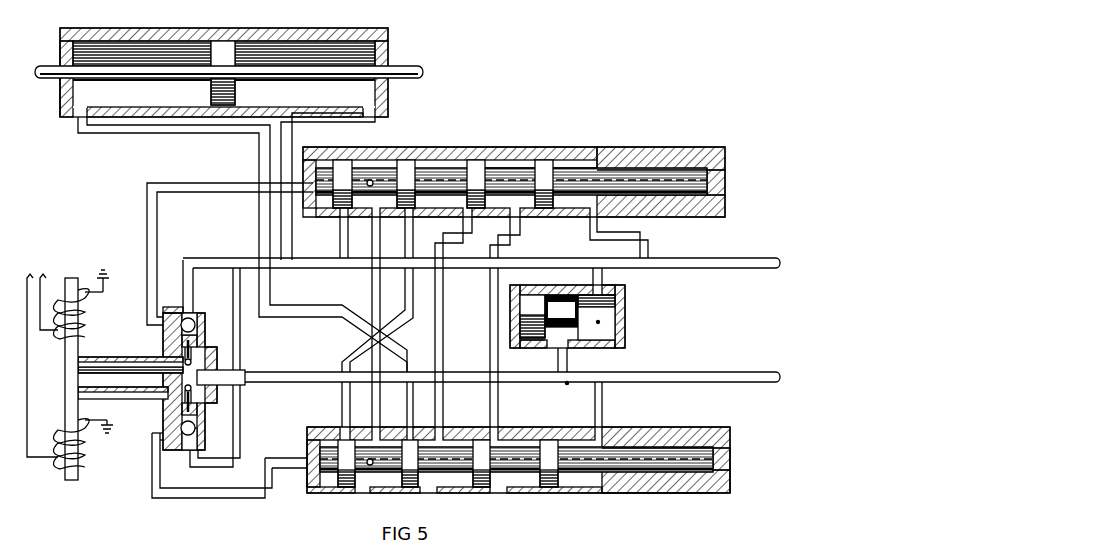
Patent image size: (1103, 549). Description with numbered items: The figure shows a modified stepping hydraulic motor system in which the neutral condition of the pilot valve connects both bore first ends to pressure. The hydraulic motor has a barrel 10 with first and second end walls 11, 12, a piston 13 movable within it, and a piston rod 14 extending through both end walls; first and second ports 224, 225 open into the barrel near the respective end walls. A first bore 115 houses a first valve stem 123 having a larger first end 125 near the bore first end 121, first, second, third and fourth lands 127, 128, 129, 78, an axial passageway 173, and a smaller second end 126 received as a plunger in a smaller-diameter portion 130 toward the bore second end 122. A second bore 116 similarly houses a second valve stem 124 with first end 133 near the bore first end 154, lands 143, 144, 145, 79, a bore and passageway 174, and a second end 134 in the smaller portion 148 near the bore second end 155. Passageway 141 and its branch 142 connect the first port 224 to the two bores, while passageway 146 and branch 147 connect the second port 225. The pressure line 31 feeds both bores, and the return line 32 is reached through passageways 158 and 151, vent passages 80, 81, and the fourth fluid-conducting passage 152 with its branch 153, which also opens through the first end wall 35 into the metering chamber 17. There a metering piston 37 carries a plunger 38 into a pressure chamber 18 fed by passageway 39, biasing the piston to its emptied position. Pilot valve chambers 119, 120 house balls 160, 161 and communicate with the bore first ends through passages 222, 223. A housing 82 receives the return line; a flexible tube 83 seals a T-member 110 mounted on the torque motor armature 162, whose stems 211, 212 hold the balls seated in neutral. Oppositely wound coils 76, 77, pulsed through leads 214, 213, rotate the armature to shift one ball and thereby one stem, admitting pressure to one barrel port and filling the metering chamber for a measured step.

The barrel 10 is at (197, 29).
The first end wall 11 is at (60, 40).
The second end wall 12 is at (388, 33).
The piston 13 is at (215, 68).
The piston rod 14 is at (420, 68).
The passageway 141 is at (78, 133).
The passageway 146 is at (376, 122).
The first port 224 is at (85, 107).
The second port 225 is at (366, 107).
The passage 222 is at (207, 183).
The passage 223 is at (200, 498).
The first bore first end 121 is at (303, 180).
The first bore second end 122 is at (725, 150).
The first valve stem 123 is at (500, 165).
The first stem first end 125 is at (334, 160).
The first stem first land 127 is at (398, 160).
The first stem second land 128 is at (468, 160).
The first stem third land 129 is at (536, 160).
The first stem fourth land 78 is at (570, 160).
The axial passageway 173 is at (605, 178).
The first bore 115 is at (612, 130).
The smaller-diameter bore portion 130 is at (615, 147).
The first stem second end 126 is at (708, 180).
The passageway 80 is at (649, 243).
The pressure line 31 is at (738, 257).
The return line 32 is at (738, 372).
The branch 153 is at (482, 232).
The passageway 152 is at (446, 333).
The passageway 151 is at (490, 397).
The branch 142 is at (385, 340).
The branch 147 is at (352, 354).
The metering chamber 17 is at (510, 285).
The metering piston 37 is at (532, 300).
The plunger 38 is at (561, 311).
The passageway 39 is at (604, 277).
The first end wall 35 is at (515, 340).
The pressure chamber 18 is at (628, 338).
The passageway 158 is at (540, 397).
The passageway 81 is at (602, 403).
The second stem second end 134 is at (715, 452).
The bore and passageway 174 is at (637, 455).
The second valve stem 124 is at (592, 485).
The second stem fourth land 79 is at (568, 480).
The smaller-diameter bore portion 148 is at (682, 493).
The second bore second end 155 is at (735, 493).
The second bore 116 is at (548, 505).
The second stem first land 143 is at (360, 487).
The second stem second land 144 is at (425, 487).
The second stem third land 145 is at (495, 487).
The second bore first end 154 is at (307, 478).
The second stem first end 133 is at (322, 455).
The second pilot valve chamber 120 is at (165, 450).
The housing 82 is at (217, 360).
The first pilot valve element 160 is at (195, 320).
The second pilot valve element 161 is at (196, 428).
The stem 211 is at (192, 348).
The stem 212 is at (192, 400).
The first pilot valve chamber 119 is at (163, 308).
The T-member 110 is at (145, 358).
The flexible tube 83 is at (153, 400).
The armature 162 is at (72, 278).
The coil 76 is at (98, 318).
The coil 77 is at (95, 462).
The lead 213 is at (27, 278).
The lead 214 is at (40, 278).